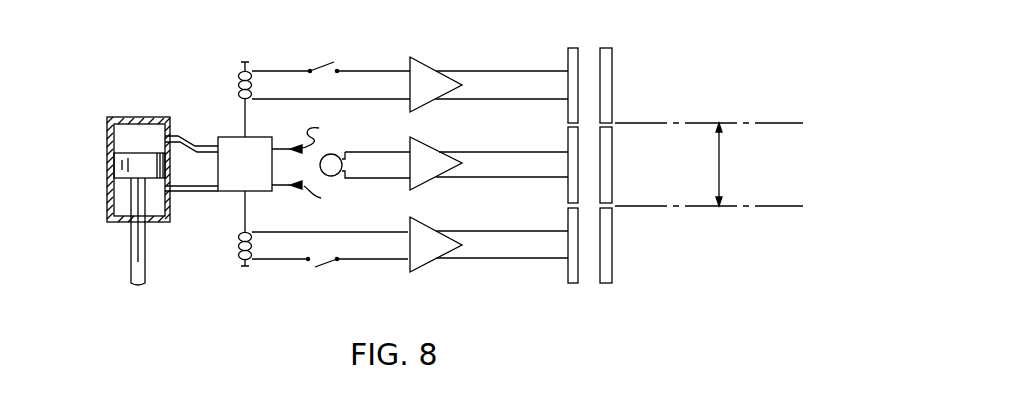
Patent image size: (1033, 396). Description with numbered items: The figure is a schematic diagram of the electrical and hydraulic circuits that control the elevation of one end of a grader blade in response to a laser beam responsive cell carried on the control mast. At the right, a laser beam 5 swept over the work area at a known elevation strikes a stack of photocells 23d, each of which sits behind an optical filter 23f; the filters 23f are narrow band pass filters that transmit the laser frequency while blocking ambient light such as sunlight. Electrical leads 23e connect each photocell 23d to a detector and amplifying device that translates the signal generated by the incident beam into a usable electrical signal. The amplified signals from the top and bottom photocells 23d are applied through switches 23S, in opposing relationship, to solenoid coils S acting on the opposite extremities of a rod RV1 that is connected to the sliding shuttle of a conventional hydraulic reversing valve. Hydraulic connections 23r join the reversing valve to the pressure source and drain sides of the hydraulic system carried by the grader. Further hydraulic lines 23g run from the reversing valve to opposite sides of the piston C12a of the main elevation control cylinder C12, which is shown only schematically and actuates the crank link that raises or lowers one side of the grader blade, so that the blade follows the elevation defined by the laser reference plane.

The hydraulic cylinder C12 is at (107, 130).
The piston C12a is at (128, 166).
The hydraulic lines from valve to cylinder 23g is at (205, 152).
The rod RV1 is at (244, 204).
The hydraulic connections 23r is at (283, 152).
The solenoid coils S is at (239, 80).
The switches 23S is at (335, 64).
The electrical leads 23e is at (503, 71).
The photocells 23d is at (577, 76).
The optical filters 23f is at (613, 78).
The laser beam 5 is at (719, 160).